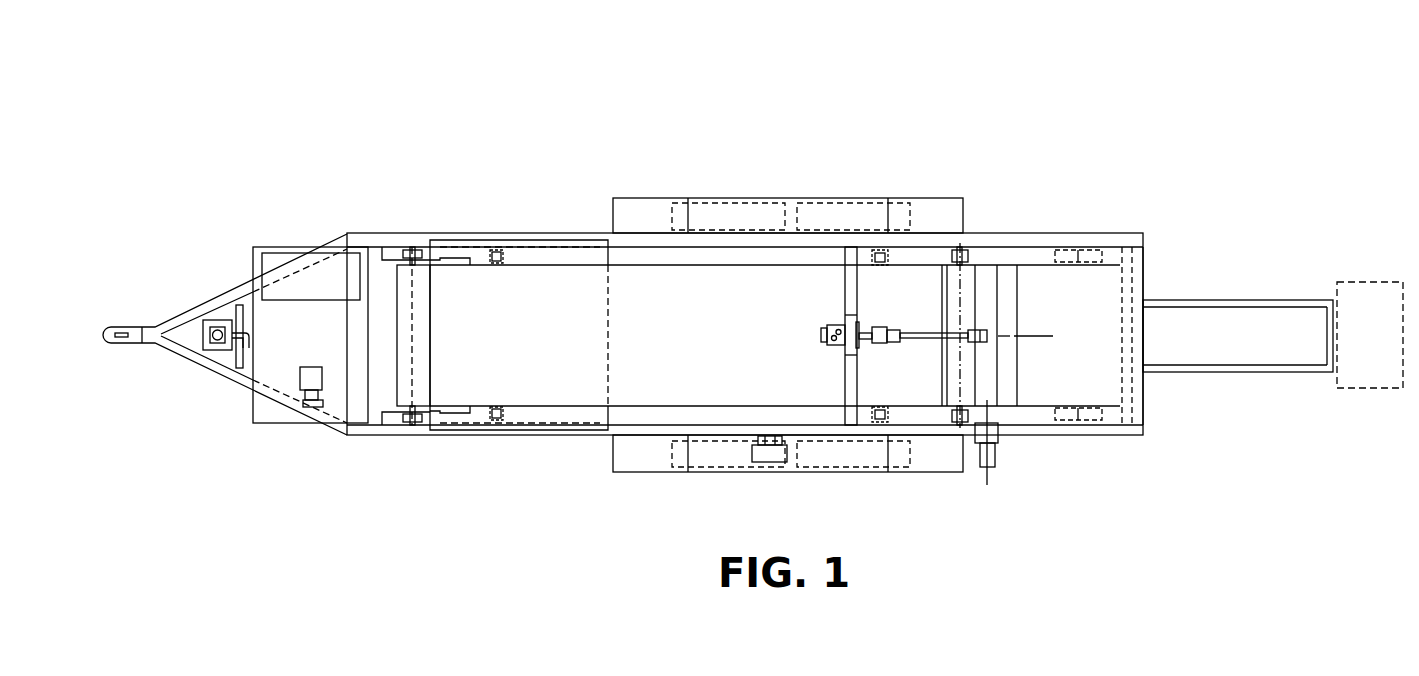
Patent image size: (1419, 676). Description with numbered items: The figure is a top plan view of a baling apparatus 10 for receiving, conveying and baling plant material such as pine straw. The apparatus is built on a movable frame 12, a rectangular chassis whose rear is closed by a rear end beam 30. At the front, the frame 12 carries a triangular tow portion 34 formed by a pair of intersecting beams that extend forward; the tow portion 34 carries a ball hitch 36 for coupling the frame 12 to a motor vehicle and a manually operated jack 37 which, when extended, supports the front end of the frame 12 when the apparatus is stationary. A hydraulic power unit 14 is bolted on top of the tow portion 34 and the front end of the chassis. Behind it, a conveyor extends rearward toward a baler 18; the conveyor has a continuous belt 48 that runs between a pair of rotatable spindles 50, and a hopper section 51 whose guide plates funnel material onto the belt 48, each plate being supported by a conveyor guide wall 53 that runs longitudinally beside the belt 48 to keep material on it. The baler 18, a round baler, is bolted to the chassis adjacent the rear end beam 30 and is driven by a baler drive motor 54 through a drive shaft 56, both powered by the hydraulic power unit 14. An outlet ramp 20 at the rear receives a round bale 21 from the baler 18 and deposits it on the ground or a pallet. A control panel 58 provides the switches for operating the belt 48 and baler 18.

The baling apparatus 10 is at (996, 104).
The movable frame 12 is at (347, 233).
The hydraulic power unit 14 is at (315, 347).
The baler 18 is at (1103, 347).
The outlet ramp 20 is at (756, 347).
The round bale 21 is at (1381, 347).
The rear end beam 30 is at (1143, 275).
The triangular tow portion 34 is at (188, 358).
The ball hitch 36 is at (110, 327).
The manually operated jack 37 is at (217, 320).
The continuous belt 48 is at (526, 347).
The rotatable spindles 50 is at (397, 287).
The hopper section 51 is at (608, 372).
The conveyor guide wall 53 is at (640, 247).
The baler drive motor 54 is at (832, 325).
The drive shaft 56 is at (920, 333).
The control panel 58 is at (770, 462).